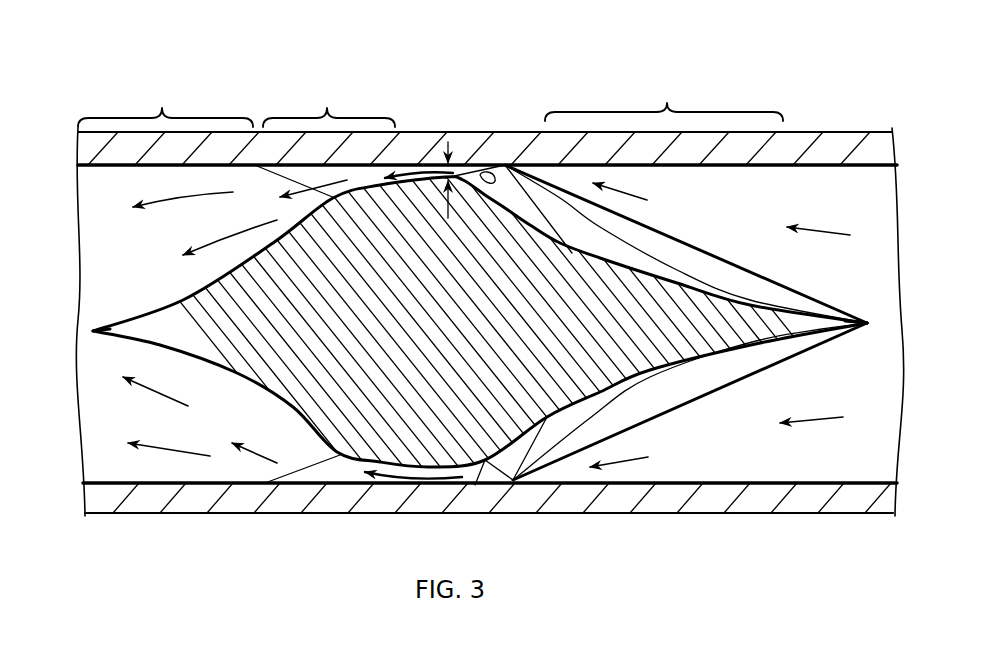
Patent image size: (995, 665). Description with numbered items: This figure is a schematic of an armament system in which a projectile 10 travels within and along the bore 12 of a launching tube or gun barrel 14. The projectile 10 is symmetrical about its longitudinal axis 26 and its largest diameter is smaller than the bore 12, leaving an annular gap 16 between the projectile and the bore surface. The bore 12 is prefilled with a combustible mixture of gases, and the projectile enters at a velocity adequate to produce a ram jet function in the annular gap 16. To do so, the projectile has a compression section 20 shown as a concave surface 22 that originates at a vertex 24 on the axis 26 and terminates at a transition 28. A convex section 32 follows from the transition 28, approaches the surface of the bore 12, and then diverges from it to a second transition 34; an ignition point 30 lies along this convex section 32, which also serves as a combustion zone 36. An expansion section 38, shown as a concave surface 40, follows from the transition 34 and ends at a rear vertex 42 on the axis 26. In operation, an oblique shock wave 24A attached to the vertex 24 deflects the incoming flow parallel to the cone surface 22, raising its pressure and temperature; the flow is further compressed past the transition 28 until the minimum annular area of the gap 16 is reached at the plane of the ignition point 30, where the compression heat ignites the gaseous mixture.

The projectile 10 is at (621, 288).
The bore 12 is at (812, 163).
The launching tube or gun barrel 14 is at (505, 164).
The annular gap 16 is at (690, 190).
The compression section 20 is at (667, 103).
The concave surface 22 is at (680, 278).
The vertex 24 is at (855, 333).
The oblique shock wave 24A is at (798, 290).
The longitudinal axis 26 is at (868, 321).
The transition 28 is at (480, 175).
The ignition point 30 is at (432, 138).
The convex section 32 is at (405, 168).
The transition 34 is at (306, 468).
The combustion zone 36 is at (327, 106).
The expansion section 38 is at (162, 108).
The concave surface 40 is at (222, 366).
The vertex 42 is at (95, 332).